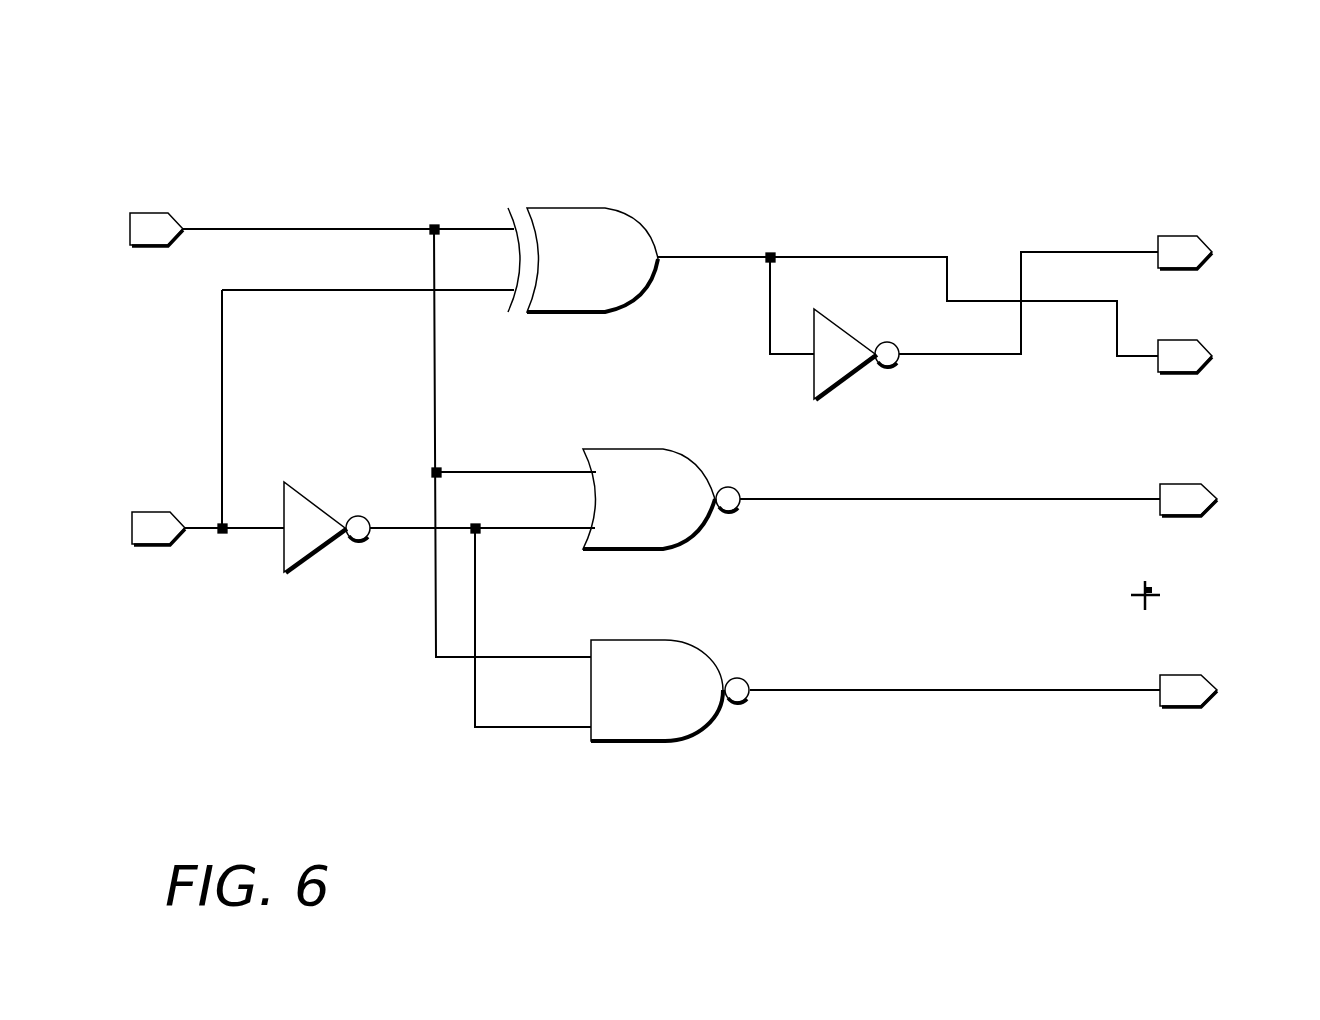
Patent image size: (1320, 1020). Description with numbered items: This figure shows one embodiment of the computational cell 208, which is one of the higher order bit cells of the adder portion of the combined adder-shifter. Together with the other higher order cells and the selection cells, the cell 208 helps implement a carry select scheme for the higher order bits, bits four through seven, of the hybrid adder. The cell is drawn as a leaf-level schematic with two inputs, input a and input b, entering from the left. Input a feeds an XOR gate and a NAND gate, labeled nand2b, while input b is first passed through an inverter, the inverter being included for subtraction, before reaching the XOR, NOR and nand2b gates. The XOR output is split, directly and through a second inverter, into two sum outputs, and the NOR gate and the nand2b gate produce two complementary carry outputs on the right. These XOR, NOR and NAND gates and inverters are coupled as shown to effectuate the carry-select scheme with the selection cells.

The computational cell 208 is at (1248, 121).
The input port a is at (147, 229).
The input port b is at (149, 528).
The NAND gate nand2b is at (670, 690).